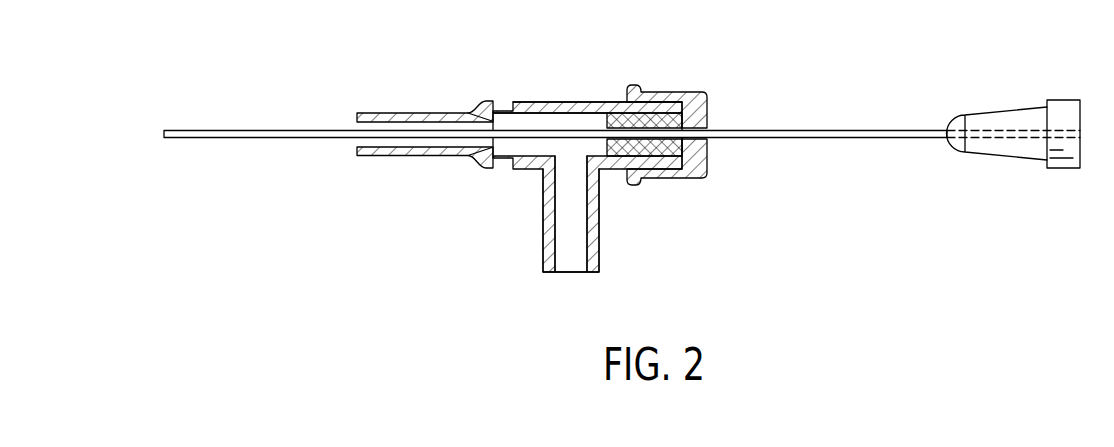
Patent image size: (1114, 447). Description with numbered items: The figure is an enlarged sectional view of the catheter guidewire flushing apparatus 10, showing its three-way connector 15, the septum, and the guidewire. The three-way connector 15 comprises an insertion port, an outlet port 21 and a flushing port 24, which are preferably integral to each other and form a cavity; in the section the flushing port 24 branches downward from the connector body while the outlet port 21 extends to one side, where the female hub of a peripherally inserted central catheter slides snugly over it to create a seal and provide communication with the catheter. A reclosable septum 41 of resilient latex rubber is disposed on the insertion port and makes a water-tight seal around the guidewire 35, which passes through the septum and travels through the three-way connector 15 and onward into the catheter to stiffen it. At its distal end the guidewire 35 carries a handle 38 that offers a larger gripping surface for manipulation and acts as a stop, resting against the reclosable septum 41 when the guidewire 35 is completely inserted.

The catheter guidewire flushing apparatus 10 is at (597, 101).
The three-way connector 15 is at (547, 101).
The outlet port 21 is at (427, 113).
The flushing port 24 is at (542, 220).
The guidewire 35 is at (868, 130).
The handle 38 is at (1063, 105).
The reclosable septum 41 is at (692, 92).